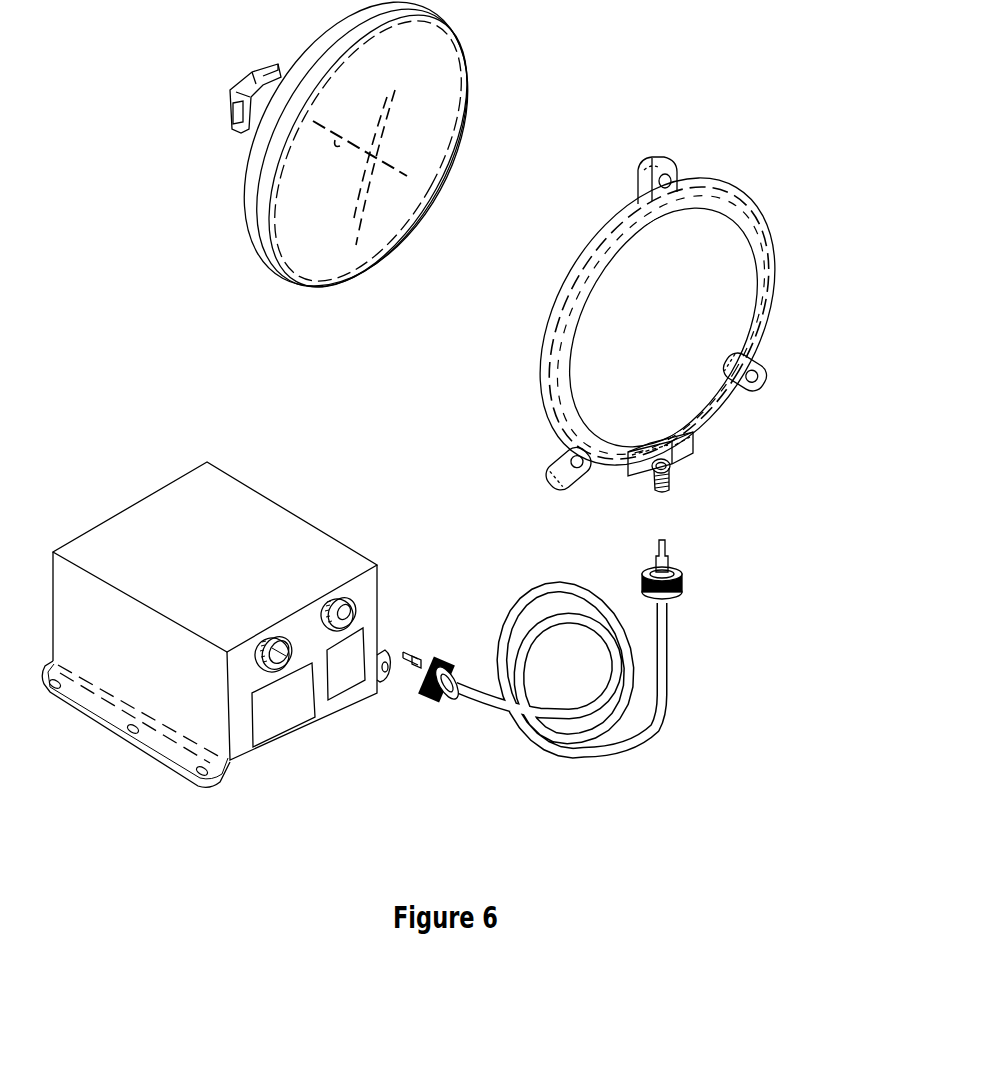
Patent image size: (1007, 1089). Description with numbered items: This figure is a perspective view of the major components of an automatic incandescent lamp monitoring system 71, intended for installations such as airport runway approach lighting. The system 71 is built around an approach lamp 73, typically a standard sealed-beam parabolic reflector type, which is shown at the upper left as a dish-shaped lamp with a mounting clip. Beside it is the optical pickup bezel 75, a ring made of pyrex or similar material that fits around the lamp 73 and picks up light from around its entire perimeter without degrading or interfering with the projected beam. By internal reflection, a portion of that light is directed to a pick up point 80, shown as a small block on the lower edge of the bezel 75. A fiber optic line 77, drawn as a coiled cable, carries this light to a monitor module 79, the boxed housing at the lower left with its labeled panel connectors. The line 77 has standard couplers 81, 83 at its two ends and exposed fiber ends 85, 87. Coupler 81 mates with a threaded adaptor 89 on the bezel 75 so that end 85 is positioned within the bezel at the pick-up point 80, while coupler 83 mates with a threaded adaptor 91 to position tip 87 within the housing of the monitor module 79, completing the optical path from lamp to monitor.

The automatic incandescent lamp monitoring system 71 is at (606, 120).
The approach lamp 73 is at (443, 107).
The optical pickup bezel 75 is at (754, 213).
The fiber optic line 77 is at (644, 738).
The monitor module 79 is at (277, 521).
The pick up point 80 is at (674, 463).
The coupler 81 is at (676, 598).
The coupler 83 is at (449, 697).
The exposed fiber end 85 is at (666, 549).
The exposed fiber end 87 is at (412, 652).
The threaded adaptor 89 is at (672, 484).
The threaded adaptor 91 is at (388, 585).